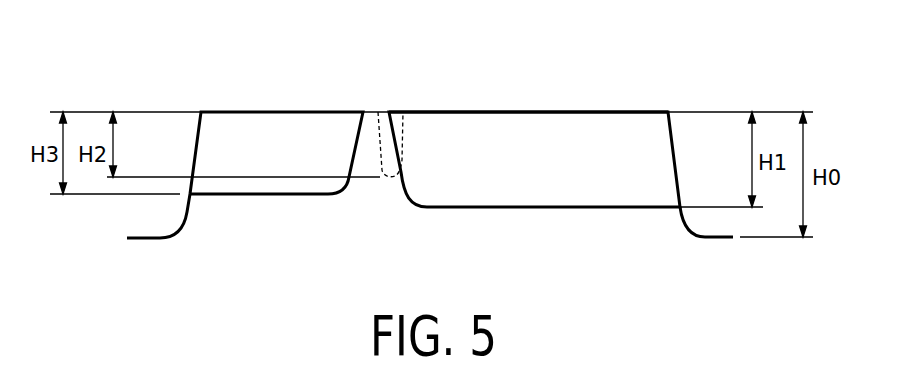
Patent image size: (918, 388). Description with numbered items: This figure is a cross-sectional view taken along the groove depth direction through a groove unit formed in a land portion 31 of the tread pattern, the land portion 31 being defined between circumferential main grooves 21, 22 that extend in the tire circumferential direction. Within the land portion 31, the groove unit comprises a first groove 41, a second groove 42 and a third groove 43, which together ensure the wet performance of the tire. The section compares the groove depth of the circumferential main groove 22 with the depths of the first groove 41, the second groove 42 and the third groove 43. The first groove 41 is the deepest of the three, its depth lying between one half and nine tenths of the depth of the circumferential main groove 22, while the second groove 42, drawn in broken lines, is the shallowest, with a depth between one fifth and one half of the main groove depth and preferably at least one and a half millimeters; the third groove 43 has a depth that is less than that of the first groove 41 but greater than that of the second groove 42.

The circumferential main groove 21 is at (167, 143).
The circumferential main groove 22 is at (697, 143).
The land portion 31 is at (601, 108).
The first groove 41 is at (528, 143).
The second groove 42 is at (402, 135).
The third groove 43 is at (293, 143).